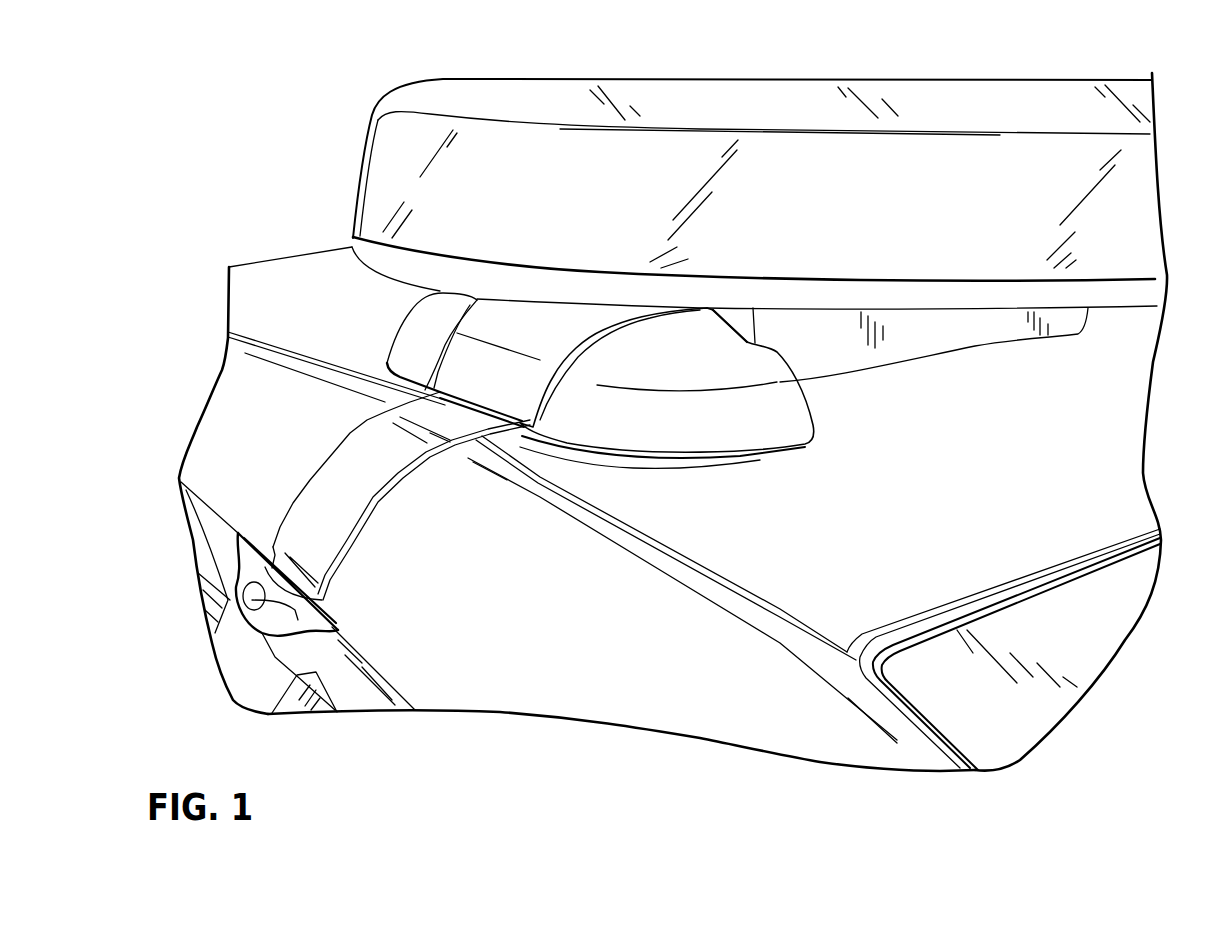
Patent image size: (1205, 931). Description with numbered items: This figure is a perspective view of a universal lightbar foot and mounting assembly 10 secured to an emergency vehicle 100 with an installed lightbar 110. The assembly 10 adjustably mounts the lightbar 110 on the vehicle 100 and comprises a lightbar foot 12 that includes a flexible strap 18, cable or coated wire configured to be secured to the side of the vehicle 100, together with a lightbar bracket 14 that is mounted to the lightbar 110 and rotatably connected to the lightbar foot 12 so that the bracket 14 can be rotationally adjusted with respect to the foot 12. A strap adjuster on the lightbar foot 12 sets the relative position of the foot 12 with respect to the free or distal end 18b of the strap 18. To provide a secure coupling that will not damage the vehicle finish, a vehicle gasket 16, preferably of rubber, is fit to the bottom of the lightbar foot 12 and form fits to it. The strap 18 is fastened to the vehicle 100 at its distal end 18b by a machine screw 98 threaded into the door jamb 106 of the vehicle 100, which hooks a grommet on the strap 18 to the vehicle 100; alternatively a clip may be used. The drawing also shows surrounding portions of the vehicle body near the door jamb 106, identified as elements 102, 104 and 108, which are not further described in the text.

The universal lightbar foot and mounting assembly 10 is at (373, 355).
The lightbar foot 12 is at (400, 320).
The lightbar bracket 14 is at (980, 345).
The vehicle gasket 16 is at (752, 460).
The flexible strap 18 is at (316, 474).
The distal end of the strap 18b is at (320, 603).
The machine screw 98 is at (262, 588).
The emergency vehicle 100 is at (1085, 522).
The side trim 102 is at (262, 633).
The trim strip 104 is at (358, 697).
The door jamb 106 is at (256, 563).
The window opening 108 is at (990, 723).
The lightbar 110 is at (362, 157).